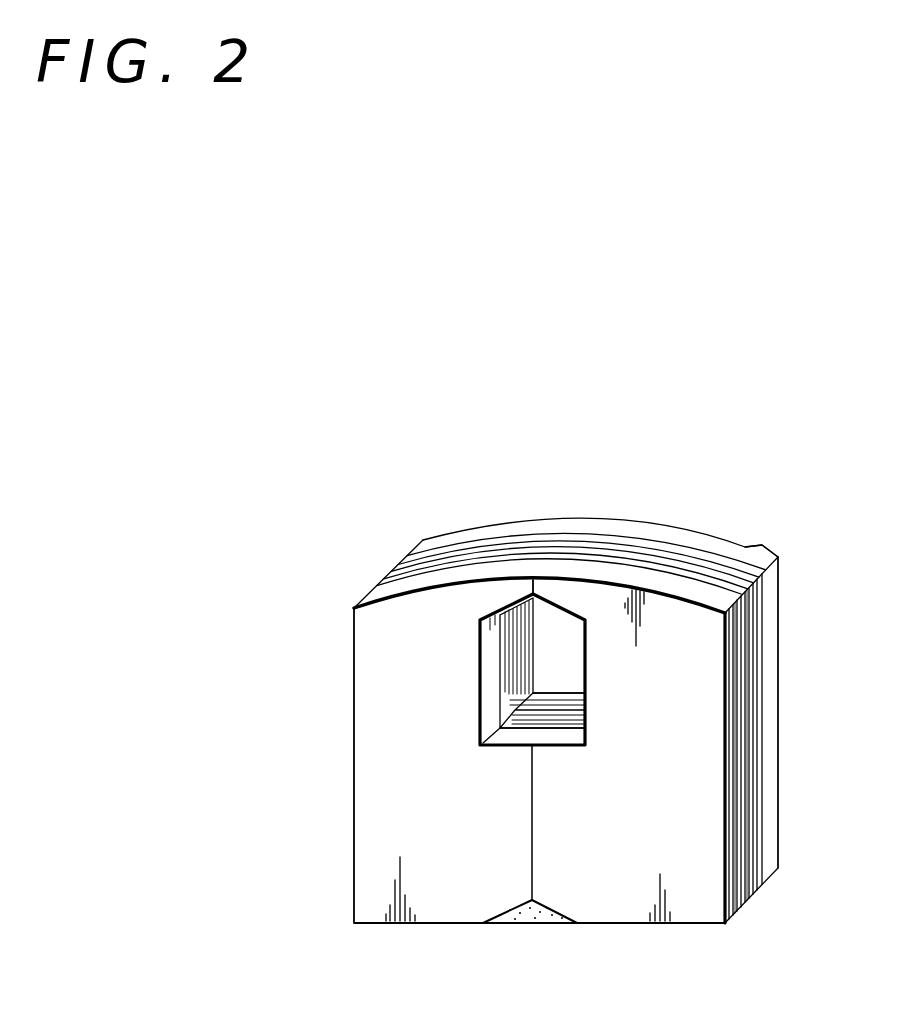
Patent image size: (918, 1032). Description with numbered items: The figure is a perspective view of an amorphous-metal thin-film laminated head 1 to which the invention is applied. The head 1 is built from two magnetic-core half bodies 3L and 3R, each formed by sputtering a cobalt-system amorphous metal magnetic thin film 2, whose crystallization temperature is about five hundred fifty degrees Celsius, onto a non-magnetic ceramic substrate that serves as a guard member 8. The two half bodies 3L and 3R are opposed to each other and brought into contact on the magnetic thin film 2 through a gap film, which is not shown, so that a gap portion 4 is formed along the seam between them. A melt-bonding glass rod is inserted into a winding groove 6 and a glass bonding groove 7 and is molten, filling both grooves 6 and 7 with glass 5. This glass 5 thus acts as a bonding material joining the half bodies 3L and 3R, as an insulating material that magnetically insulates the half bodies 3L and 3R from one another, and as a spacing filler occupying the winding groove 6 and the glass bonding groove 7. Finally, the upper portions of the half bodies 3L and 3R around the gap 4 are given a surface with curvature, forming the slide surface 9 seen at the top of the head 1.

The amorphous-metal thin-film laminated head 1 is at (569, 497).
The amorphous metal magnetic thin film 2 is at (766, 676).
The magnetic-core half body 3L is at (462, 552).
The magnetic-core half body 3R is at (636, 527).
The gap portion 4 is at (535, 580).
The glass 5 is at (538, 612).
The winding groove 6 is at (563, 668).
The glass bonding groove 7 is at (543, 924).
The guard member 8 is at (652, 713).
The slide surface 9 is at (714, 556).